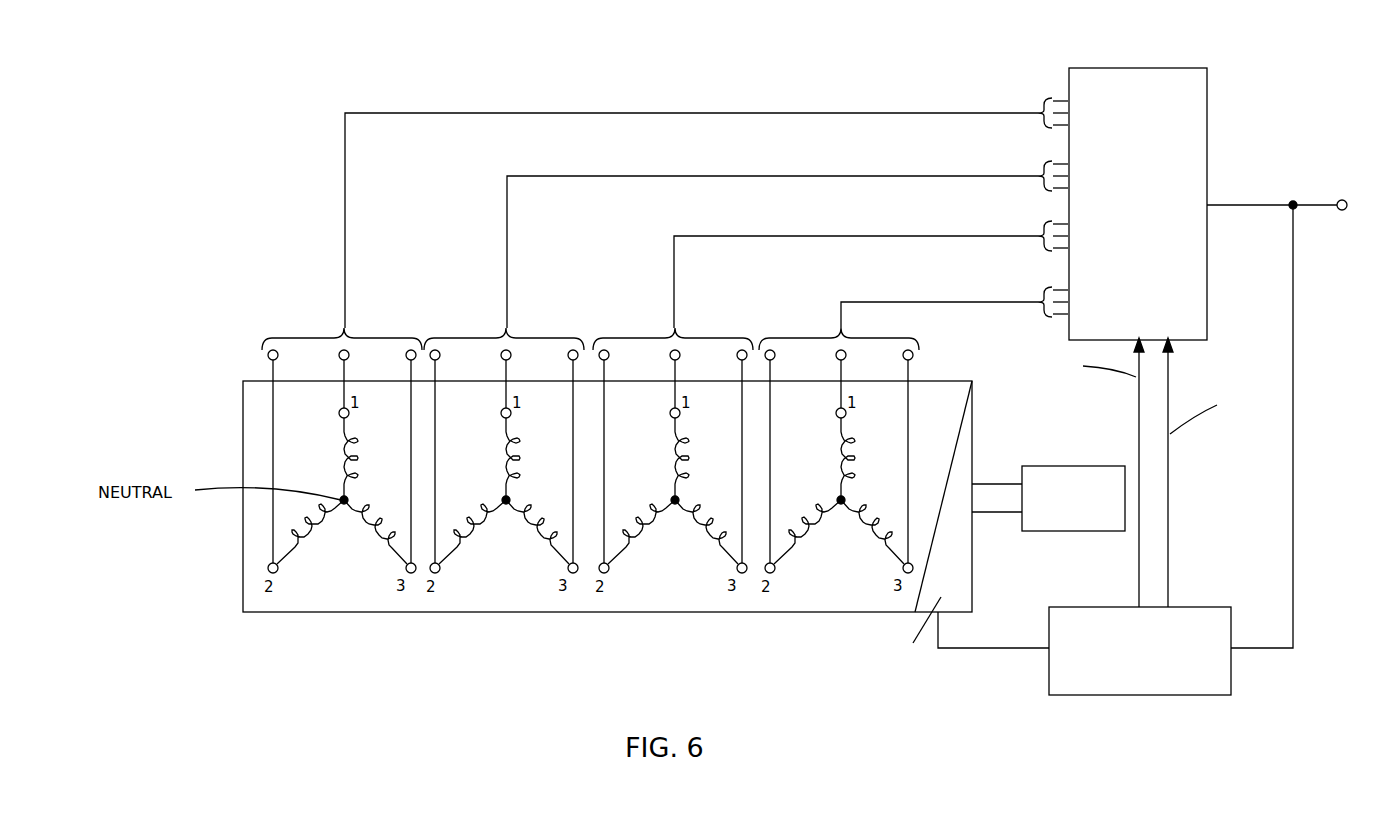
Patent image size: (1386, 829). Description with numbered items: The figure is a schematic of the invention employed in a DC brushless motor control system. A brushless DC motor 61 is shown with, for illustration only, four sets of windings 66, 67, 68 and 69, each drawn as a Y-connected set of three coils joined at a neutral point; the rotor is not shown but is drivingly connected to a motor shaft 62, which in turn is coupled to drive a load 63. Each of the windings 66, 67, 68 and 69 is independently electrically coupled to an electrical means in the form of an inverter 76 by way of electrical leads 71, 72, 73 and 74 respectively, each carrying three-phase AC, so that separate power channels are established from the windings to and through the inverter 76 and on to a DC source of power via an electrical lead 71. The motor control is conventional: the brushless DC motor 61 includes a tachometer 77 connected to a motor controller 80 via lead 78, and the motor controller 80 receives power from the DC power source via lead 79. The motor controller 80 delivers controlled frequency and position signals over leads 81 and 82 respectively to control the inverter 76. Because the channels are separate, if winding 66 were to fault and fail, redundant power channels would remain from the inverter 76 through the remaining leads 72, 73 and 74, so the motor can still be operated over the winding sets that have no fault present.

The brushless DC motor 61 is at (262, 612).
The motor shaft 62 is at (992, 482).
The load 63 is at (1052, 463).
The winding 66 is at (339, 577).
The winding 67 is at (502, 577).
The winding 68 is at (663, 577).
The winding 69 is at (833, 580).
The electrical lead 71 is at (345, 200).
The electrical lead 72 is at (507, 245).
The electrical lead 73 is at (674, 292).
The electrical lead 74 is at (841, 310).
The inverter 76 is at (1098, 66).
The tachometer 77 is at (975, 572).
The lead 78 is at (997, 650).
The lead 79 is at (1294, 580).
The motor controller 80 is at (1130, 697).
The lead 81 is at (1139, 482).
The lead 82 is at (1170, 448).